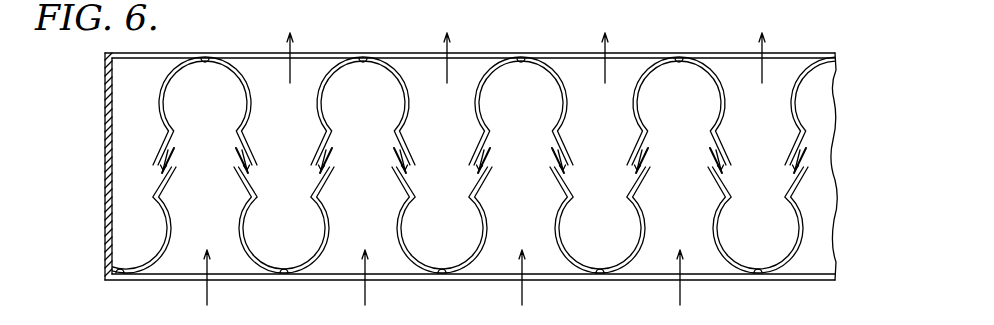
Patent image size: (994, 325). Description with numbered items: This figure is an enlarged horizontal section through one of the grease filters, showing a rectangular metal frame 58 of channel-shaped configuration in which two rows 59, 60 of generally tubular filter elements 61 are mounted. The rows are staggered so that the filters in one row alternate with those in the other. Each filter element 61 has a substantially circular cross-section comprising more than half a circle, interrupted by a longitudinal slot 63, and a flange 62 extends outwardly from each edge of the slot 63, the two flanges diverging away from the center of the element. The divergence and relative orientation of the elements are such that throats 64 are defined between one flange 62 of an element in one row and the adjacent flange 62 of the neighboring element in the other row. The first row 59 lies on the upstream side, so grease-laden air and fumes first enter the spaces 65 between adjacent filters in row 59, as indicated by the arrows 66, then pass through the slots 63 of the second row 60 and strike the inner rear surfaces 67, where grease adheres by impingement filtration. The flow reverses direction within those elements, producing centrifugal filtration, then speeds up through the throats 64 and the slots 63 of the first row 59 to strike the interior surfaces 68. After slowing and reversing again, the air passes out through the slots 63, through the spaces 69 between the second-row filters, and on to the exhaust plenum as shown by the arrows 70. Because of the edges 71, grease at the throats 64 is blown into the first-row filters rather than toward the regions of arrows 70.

The rectangular metal frame 58 is at (105, 62).
The first row 59 is at (94, 234).
The second row 60 is at (94, 142).
The filter element 61 is at (159, 97).
The flange 62 is at (324, 154).
The longitudinal slot 63 is at (218, 149).
The throat 64 is at (240, 164).
The space 65 is at (218, 229).
The arrows 66 is at (206, 298).
The inner rear surface 67 is at (207, 62).
The interior surface 68 is at (116, 270).
The space 69 is at (294, 113).
The arrows 70 is at (293, 38).
The edge 71 is at (160, 164).